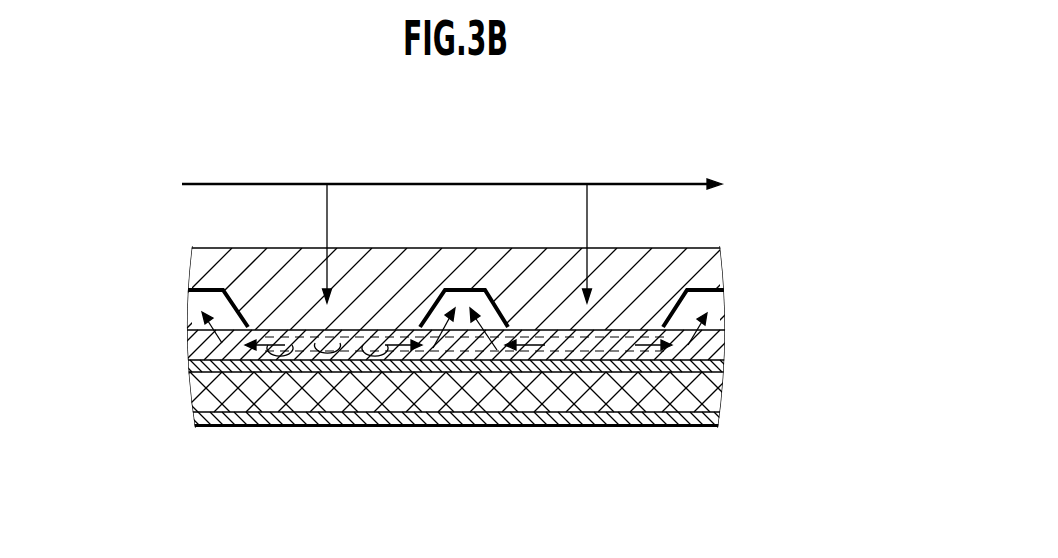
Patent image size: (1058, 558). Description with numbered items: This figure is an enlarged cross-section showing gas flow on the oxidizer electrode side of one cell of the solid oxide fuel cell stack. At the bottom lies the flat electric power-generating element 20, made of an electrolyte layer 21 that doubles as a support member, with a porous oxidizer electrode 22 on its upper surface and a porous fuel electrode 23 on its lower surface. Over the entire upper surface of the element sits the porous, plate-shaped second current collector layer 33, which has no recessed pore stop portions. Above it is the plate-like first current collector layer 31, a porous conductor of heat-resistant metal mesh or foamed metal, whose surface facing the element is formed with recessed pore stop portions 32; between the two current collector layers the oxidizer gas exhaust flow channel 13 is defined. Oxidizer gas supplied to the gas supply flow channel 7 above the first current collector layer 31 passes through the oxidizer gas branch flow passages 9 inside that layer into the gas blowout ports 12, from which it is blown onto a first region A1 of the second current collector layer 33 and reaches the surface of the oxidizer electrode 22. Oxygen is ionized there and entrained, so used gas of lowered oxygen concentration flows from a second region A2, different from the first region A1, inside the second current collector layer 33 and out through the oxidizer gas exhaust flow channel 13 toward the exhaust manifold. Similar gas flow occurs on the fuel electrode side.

The gas supply flow channel 7 is at (428, 183).
The oxidizer gas branch flow passages 9 is at (328, 248).
The gas blowout ports 12 is at (332, 340).
The oxidizer gas exhaust flow channel 13 is at (468, 320).
The electric power-generating element 20 is at (507, 393).
The electrolyte layer 21 is at (712, 400).
The oxidizer electrode 22 is at (710, 367).
The fuel electrode 23 is at (712, 418).
The first current collector layer 31 is at (707, 278).
The pore stop portions 32 is at (465, 290).
The second current collector layer 33 is at (712, 352).
The first region A1 is at (365, 330).
The second region A2 is at (288, 387).